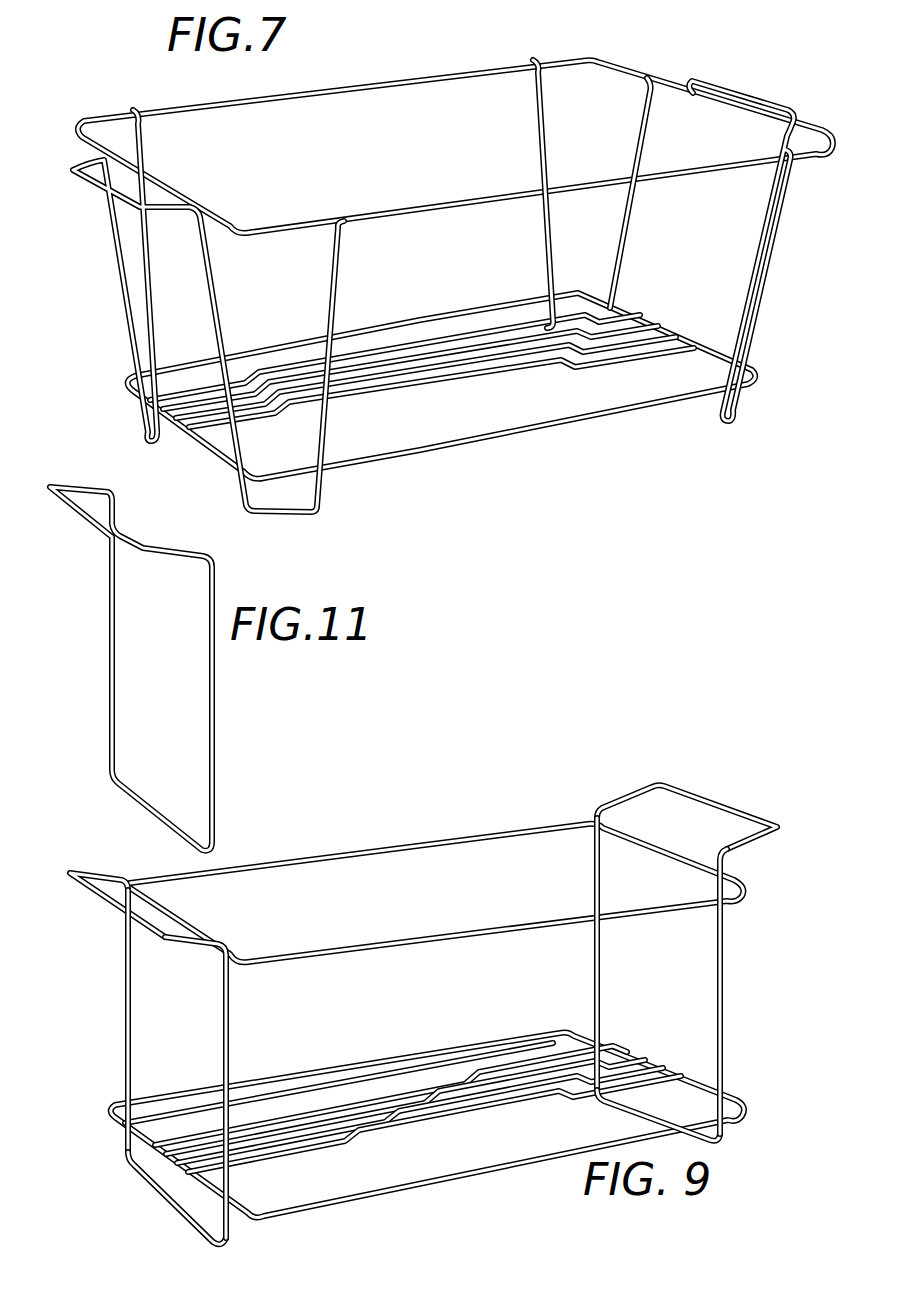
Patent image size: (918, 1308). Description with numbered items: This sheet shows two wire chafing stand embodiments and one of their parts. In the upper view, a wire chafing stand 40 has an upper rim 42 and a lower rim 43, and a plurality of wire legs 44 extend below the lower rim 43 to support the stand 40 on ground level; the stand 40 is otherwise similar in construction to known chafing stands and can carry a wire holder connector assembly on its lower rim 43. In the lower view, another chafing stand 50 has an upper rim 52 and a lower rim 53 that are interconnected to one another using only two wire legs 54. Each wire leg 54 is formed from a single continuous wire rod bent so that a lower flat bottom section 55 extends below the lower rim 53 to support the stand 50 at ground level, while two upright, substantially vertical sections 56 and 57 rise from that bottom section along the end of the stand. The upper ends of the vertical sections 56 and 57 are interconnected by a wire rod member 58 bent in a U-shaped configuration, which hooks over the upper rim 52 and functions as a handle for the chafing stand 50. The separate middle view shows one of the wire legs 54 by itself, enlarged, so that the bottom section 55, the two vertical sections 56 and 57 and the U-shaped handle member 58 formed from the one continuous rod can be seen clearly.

In FIG. 7, the chafing stand 40 is at (441, 261).
In FIG. 7, the upper rim 42 is at (238, 110).
In FIG. 7, the lower rim 43 is at (443, 312).
In FIG. 7, the wire legs 44 is at (200, 328).
In FIG. 9, the chafing stand 50 is at (414, 1001).
In FIG. 9, the upper rim 52 is at (383, 845).
In FIG. 9, the lower rim 53 is at (404, 1055).
In FIG. 11, the wire legs 54 is at (232, 710).
In FIG. 9, the wire legs 54 is at (414, 1001).
In FIG. 9, the lower flat bottom section 55 is at (163, 1200).
In FIG. 9, the upright substantially vertical section 56 is at (127, 938).
In FIG. 9, the upright substantially vertical section 57 is at (222, 1037).
In FIG. 9, the wire rod member 58 is at (53, 862).